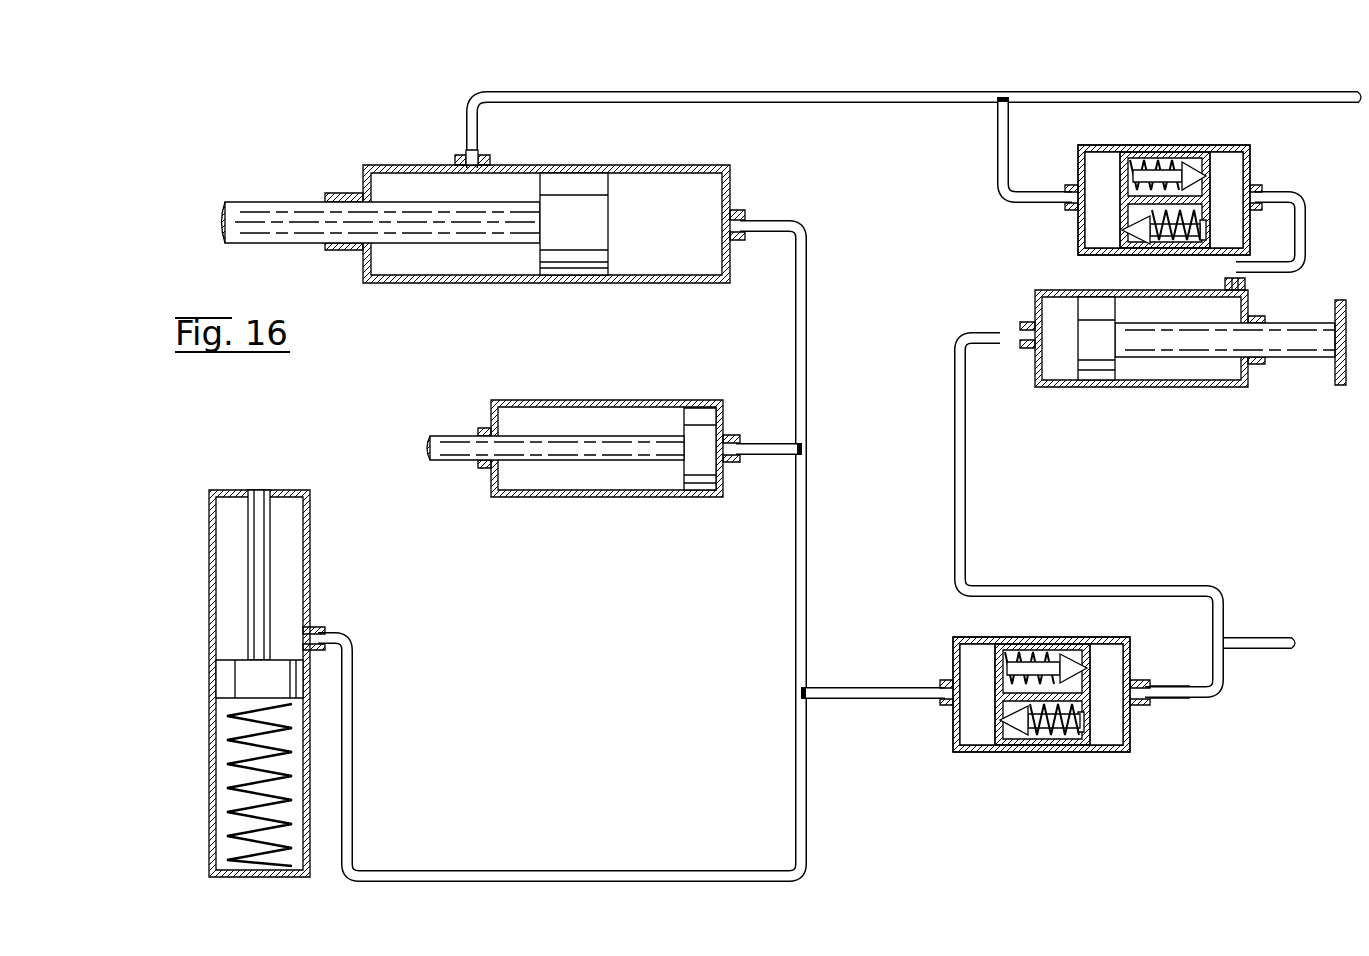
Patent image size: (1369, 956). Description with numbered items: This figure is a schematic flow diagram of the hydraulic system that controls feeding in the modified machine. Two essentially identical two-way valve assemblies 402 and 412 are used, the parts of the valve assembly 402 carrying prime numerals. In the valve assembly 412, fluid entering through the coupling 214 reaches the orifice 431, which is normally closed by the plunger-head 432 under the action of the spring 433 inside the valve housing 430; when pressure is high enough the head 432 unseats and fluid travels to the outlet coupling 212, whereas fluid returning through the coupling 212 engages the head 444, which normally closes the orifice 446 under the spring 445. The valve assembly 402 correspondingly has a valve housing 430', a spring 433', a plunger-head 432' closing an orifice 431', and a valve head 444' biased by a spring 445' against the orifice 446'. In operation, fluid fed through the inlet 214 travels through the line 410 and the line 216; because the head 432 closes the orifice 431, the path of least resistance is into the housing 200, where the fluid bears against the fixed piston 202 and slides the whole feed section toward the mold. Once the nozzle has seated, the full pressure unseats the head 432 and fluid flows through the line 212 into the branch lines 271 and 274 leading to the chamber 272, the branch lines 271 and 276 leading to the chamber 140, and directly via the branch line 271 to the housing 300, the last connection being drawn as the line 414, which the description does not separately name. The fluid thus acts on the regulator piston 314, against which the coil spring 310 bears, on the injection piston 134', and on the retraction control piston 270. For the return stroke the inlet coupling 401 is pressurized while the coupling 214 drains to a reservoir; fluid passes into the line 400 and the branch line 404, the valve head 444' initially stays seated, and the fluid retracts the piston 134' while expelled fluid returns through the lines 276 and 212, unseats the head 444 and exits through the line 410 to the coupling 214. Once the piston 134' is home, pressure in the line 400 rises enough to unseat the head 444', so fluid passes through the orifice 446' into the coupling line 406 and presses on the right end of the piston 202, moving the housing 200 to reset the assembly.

The line 400 is at (690, 92).
The inlet coupling 401 is at (1295, 96).
The injection piston 134' is at (422, 196).
The chamber 140 is at (650, 164).
The branch line 404 is at (997, 146).
The valve housing 430' is at (1136, 192).
The spring 433' is at (1156, 149).
The plunger-head 432' is at (1197, 145).
The orifice 431' is at (1252, 160).
The spring 445' is at (1261, 199).
The two-way valve assembly 402 is at (1072, 226).
The orifice 446' is at (1074, 248).
The valve head 444' is at (1164, 245).
The coupling line 406 is at (1306, 262).
The branch line 276 is at (803, 240).
The retraction control piston 270 is at (522, 440).
The chamber 272 is at (606, 400).
The branch line 274 is at (760, 440).
The piston 202 is at (1095, 388).
The housing 200 is at (1170, 388).
The line 216 is at (967, 530).
The housing 300 is at (312, 605).
The branch line 271 is at (796, 556).
The regulator piston 314 is at (230, 680).
The coil spring 310 is at (250, 740).
The outlet coupling 212 is at (836, 688).
The spring 433 is at (1032, 642).
The plunger-head 432 is at (1068, 638).
The orifice 431 is at (1122, 650).
The valve housing 430 is at (1078, 694).
The inlet coupling 214 is at (1262, 640).
The line 410 is at (1185, 700).
The orifice 446 is at (982, 750).
The head 444 is at (1033, 749).
The two-way valve assembly 412 is at (1025, 760).
The spring 445 is at (1106, 753).
The hydraulic line 414 is at (505, 870).